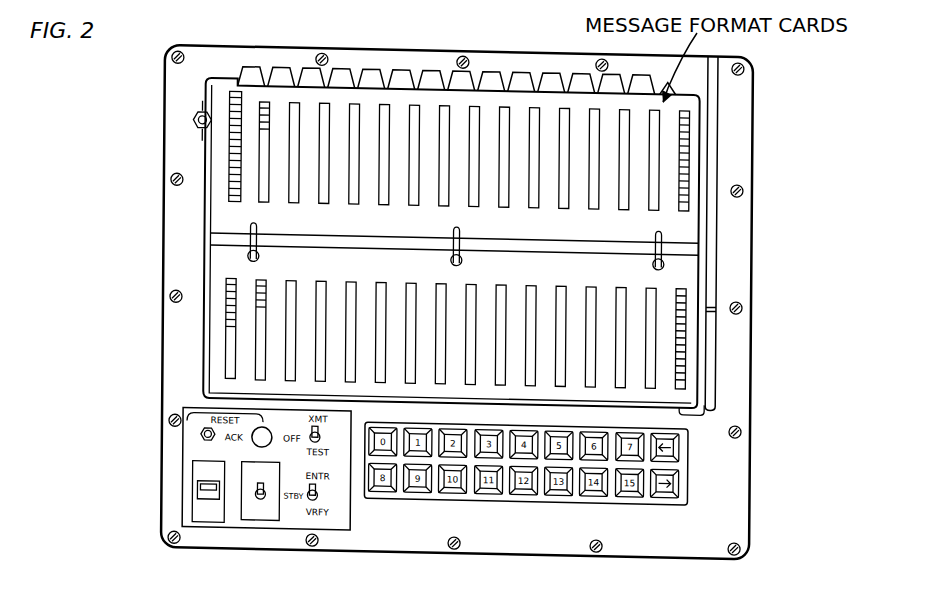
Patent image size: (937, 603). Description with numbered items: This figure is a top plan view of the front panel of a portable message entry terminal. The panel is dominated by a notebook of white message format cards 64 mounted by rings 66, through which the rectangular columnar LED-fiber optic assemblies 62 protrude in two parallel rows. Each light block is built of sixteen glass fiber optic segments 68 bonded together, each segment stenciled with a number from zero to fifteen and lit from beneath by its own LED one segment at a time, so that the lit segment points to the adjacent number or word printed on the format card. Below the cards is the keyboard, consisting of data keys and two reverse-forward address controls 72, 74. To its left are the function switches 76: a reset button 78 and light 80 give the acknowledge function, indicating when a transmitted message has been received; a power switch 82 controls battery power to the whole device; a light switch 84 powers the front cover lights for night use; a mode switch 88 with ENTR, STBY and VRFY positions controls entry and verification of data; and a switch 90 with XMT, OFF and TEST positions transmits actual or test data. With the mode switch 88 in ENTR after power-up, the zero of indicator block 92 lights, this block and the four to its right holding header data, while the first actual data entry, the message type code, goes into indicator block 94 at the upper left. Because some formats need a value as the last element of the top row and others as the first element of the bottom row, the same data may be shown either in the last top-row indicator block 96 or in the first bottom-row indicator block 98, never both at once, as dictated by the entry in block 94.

The columnar LED-fiber optic assembly 62 is at (244, 320).
The message format card 64 is at (318, 258).
The ring 66 is at (460, 240).
The segment 68 is at (229, 94).
The reverse address control 72 is at (676, 443).
The forward address control 74 is at (676, 482).
The function switches 76 is at (196, 451).
The reset button 78 is at (203, 433).
The light 80 is at (264, 427).
The power switch 82 is at (195, 489).
The light switch 84 is at (262, 520).
The mode switch 88 is at (320, 498).
The transmit switch 90 is at (318, 432).
The indicator block 92 is at (531, 299).
The indicator block 94 is at (220, 148).
The indicator block 96 is at (698, 146).
The indicator block 98 is at (219, 357).